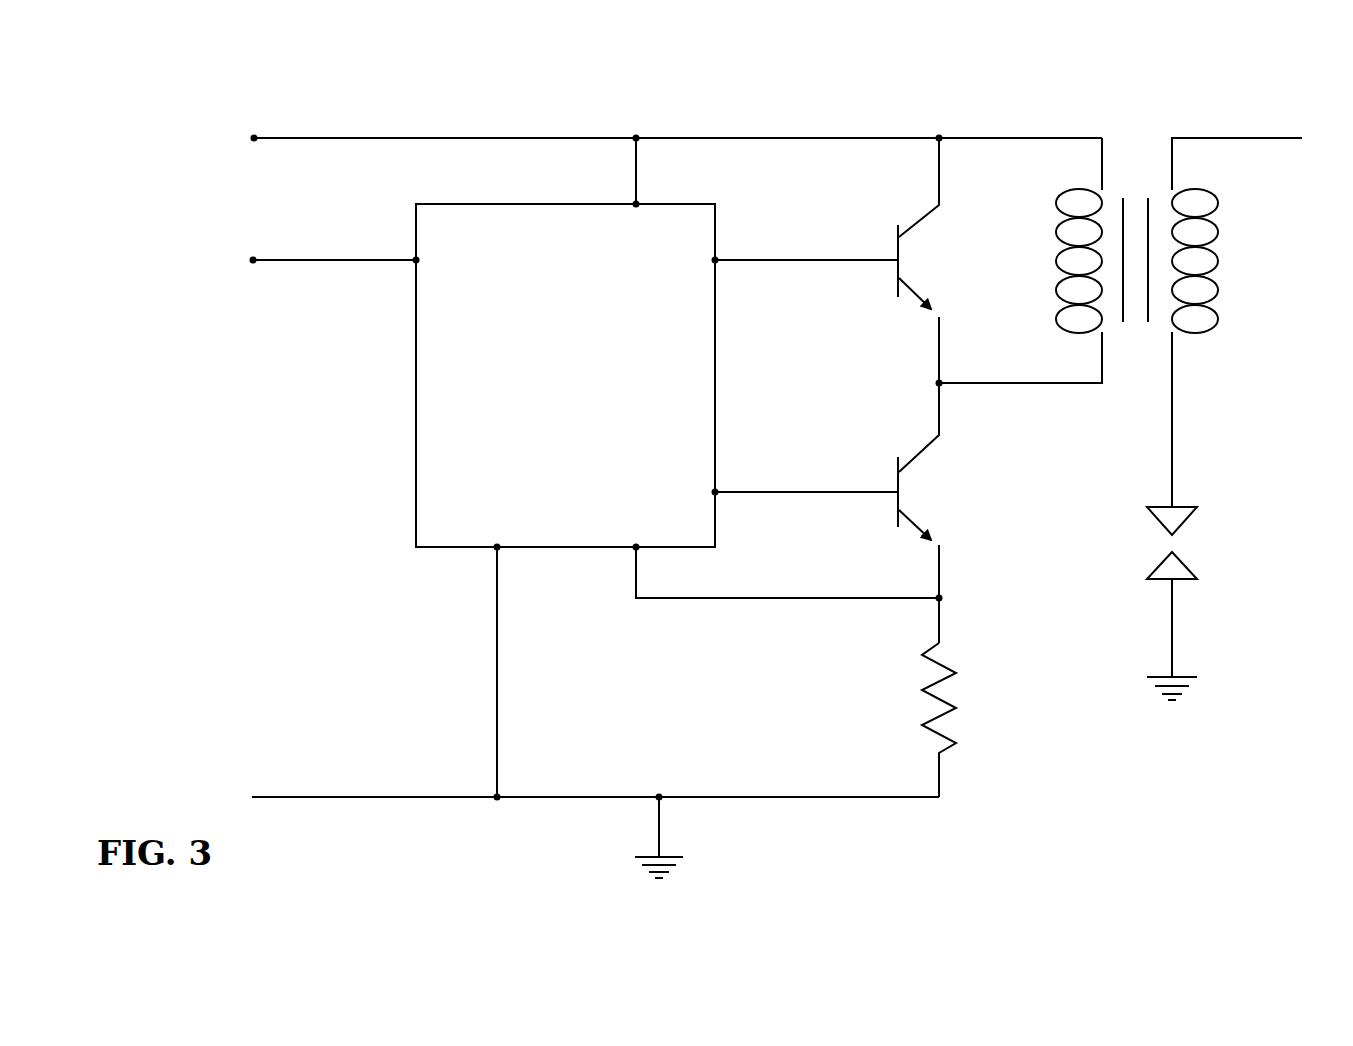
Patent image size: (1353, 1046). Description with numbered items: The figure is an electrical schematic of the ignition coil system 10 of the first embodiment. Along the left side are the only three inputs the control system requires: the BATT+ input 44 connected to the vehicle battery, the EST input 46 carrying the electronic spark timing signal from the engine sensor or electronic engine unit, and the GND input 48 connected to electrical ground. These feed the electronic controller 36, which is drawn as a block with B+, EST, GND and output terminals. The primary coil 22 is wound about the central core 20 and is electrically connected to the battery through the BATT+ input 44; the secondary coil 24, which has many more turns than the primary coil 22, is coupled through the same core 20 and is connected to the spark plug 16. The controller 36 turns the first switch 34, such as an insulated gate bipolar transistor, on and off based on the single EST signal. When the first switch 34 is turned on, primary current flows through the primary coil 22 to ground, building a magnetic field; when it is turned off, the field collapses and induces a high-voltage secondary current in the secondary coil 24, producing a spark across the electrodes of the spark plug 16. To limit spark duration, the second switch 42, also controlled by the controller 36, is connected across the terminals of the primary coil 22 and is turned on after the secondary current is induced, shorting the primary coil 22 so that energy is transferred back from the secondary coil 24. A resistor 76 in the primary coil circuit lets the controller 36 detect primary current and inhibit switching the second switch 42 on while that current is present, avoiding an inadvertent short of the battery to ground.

The ignition coil system 10 is at (533, 106).
The BATT+ input 44 is at (277, 137).
The EST input 46 is at (277, 259).
The GND input 48 is at (252, 797).
The electronic controller 36 is at (440, 426).
The second switching circuit 42 is at (895, 249).
The first switching circuit 34 is at (895, 479).
The resistor 76 is at (925, 718).
The primary wire coil 22 is at (1060, 261).
The secondary wire coil 24 is at (1210, 256).
The central core 20 is at (1133, 200).
The spark plug 16 is at (1185, 548).